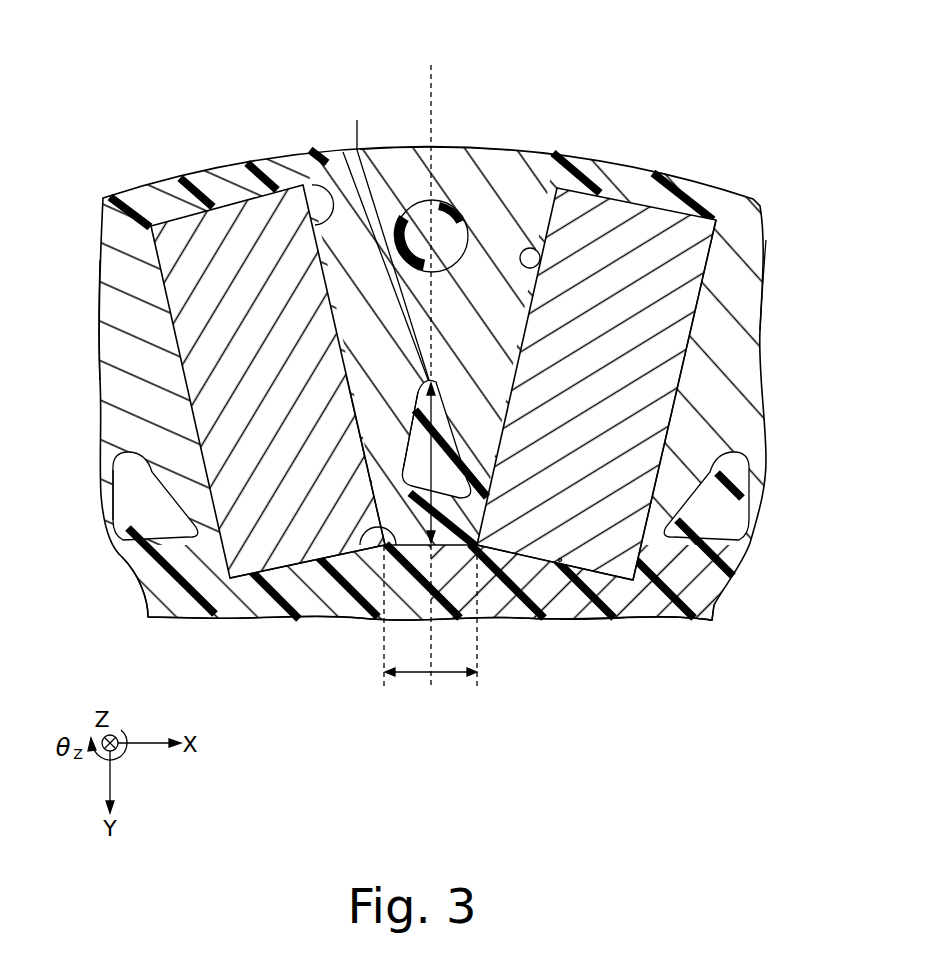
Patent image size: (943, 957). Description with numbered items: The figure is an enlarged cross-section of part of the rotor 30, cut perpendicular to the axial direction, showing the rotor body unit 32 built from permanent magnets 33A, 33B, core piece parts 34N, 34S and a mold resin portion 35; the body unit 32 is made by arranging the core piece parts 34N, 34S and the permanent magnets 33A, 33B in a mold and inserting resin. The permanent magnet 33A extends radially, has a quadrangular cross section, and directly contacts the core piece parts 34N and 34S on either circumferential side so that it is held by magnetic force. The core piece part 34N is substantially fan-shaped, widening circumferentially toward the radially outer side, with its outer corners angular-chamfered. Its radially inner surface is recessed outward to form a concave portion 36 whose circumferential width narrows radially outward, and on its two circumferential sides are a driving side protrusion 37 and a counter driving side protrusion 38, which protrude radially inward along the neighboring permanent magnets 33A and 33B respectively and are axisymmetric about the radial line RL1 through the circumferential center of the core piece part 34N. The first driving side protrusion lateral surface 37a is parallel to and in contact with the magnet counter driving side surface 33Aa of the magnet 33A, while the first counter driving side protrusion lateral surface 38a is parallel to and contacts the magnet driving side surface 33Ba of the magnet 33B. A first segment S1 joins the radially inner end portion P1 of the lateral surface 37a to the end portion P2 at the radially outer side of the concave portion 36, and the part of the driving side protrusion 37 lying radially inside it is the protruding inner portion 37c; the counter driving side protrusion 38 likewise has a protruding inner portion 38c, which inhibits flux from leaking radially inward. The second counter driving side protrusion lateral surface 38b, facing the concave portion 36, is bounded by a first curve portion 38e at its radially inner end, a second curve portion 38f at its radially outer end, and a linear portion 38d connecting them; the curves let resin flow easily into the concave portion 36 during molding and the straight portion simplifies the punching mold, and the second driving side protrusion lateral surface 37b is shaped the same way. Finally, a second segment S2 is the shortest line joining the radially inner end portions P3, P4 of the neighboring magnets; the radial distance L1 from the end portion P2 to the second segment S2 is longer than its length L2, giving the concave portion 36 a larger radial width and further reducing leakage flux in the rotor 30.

The rotor 30 is at (426, 359).
The rotor body unit 32 is at (719, 182).
The permanent magnet 33A is at (677, 192).
The magnet counter driving side surface 33Aa is at (625, 192).
The permanent magnet 33B is at (237, 240).
The magnet driving side surface 33Ba is at (322, 148).
The core piece part 34N is at (509, 140).
The core piece part 34S is at (124, 303).
The mold resin portion 35 is at (262, 614).
The concave portion 36 is at (380, 410).
The driving side protrusion 37 is at (644, 446).
The first driving side protrusion lateral surface 37a is at (655, 432).
The second driving side protrusion lateral surface 37b is at (528, 573).
The protruding inner portion 37c is at (604, 616).
The counter driving side protrusion 38 is at (264, 511).
The first counter driving side protrusion lateral surface 38a is at (390, 422).
The second counter driving side protrusion lateral surface 38b is at (265, 456).
The protruding inner portion 38c is at (146, 585).
The linear portion 38d is at (118, 473).
The first curve portion 38e is at (305, 552).
The second curve portion 38f is at (403, 420).
The first segment S1 is at (700, 533).
The second segment S2 is at (352, 562).
The end portion P1 is at (560, 560).
The end portion P2 is at (357, 122).
The end portion P3 is at (496, 618).
The end portion P4 is at (366, 618).
The radial distance L1 is at (419, 463).
The length L2 is at (431, 660).
The radial line RL1 is at (432, 86).